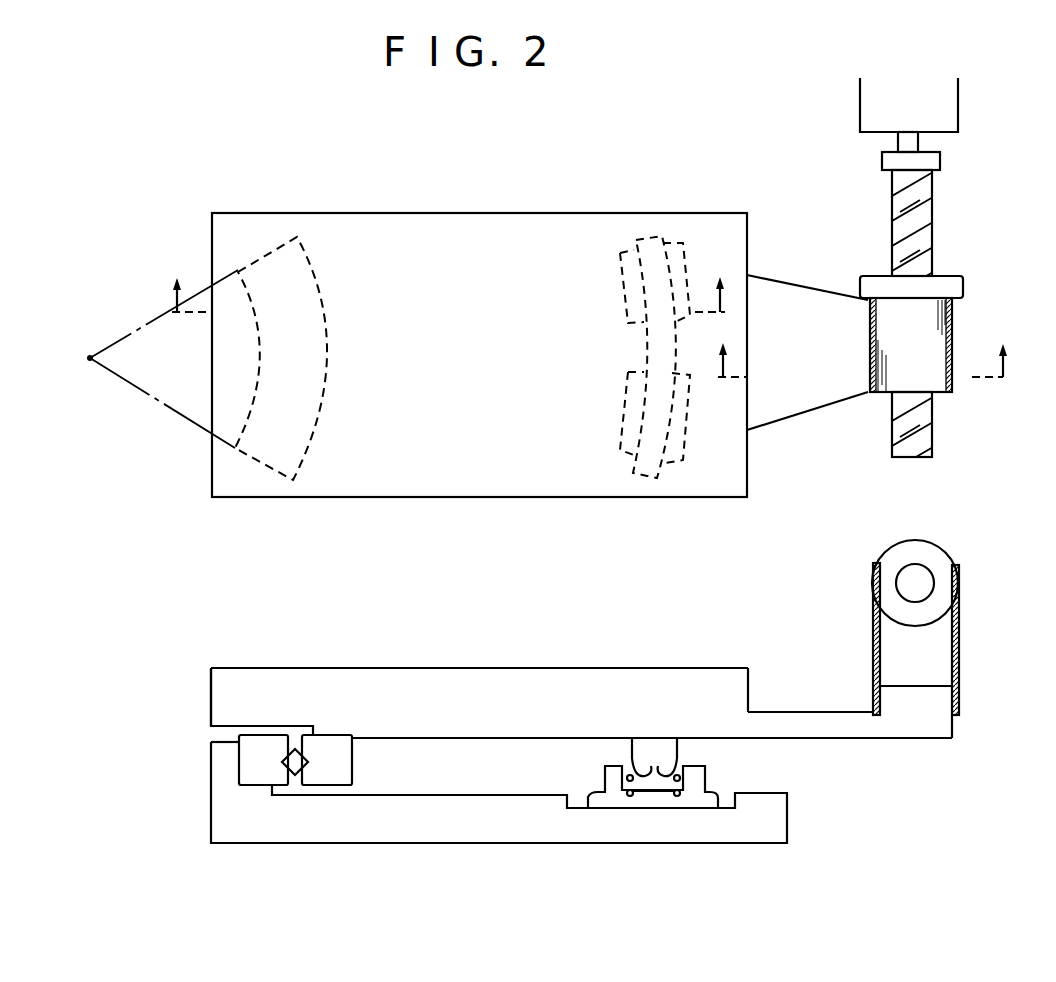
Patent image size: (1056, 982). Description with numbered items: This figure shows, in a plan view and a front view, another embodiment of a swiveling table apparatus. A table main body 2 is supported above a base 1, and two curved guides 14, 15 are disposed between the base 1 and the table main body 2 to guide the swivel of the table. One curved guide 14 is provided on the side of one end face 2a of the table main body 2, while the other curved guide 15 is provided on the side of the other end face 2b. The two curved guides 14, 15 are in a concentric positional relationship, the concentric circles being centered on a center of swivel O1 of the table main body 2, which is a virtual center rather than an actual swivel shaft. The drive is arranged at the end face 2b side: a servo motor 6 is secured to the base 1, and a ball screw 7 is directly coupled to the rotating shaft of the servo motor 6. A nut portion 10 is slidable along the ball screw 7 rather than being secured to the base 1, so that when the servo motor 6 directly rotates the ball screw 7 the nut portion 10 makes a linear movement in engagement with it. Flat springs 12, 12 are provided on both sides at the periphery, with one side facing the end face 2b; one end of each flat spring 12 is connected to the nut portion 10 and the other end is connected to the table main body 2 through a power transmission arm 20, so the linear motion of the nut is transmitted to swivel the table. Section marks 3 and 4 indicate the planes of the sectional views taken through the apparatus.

The base 1 is at (787, 817).
The table main body 2 is at (543, 223).
The one end face of the table main body 2a is at (211, 690).
The other end face of the table main body 2b is at (748, 684).
The section line III 3 is at (863, 359).
The section line IV 4 is at (444, 294).
The servo motor 6 is at (949, 107).
The ball screw 7 is at (932, 213).
The nut portion 10 is at (953, 330).
The flat spring 12 is at (868, 303).
The curved guide 14 is at (272, 478).
The curved guide 15 is at (630, 477).
The power transmission arm 20 is at (792, 405).
The center of swivel O1 is at (149, 359).